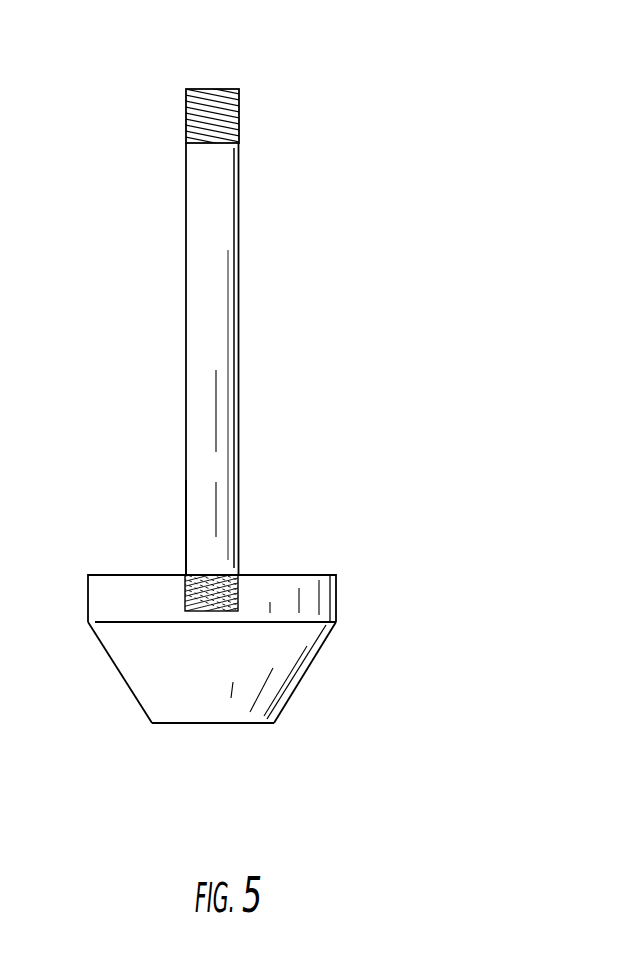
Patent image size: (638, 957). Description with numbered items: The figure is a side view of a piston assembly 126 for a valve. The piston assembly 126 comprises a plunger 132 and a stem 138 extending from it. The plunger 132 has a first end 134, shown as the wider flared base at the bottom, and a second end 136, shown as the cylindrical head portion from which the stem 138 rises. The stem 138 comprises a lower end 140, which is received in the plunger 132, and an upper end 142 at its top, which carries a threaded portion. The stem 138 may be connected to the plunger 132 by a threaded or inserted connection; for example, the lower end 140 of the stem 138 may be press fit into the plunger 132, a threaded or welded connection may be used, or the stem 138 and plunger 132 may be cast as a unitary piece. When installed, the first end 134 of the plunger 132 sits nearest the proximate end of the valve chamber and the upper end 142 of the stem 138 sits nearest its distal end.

The piston assembly 126 is at (400, 134).
The plunger 132 is at (299, 658).
The first end 134 is at (248, 718).
The second end 136 is at (303, 582).
The stem 138 is at (226, 312).
The lower end 140 is at (192, 552).
The upper end 142 is at (197, 156).